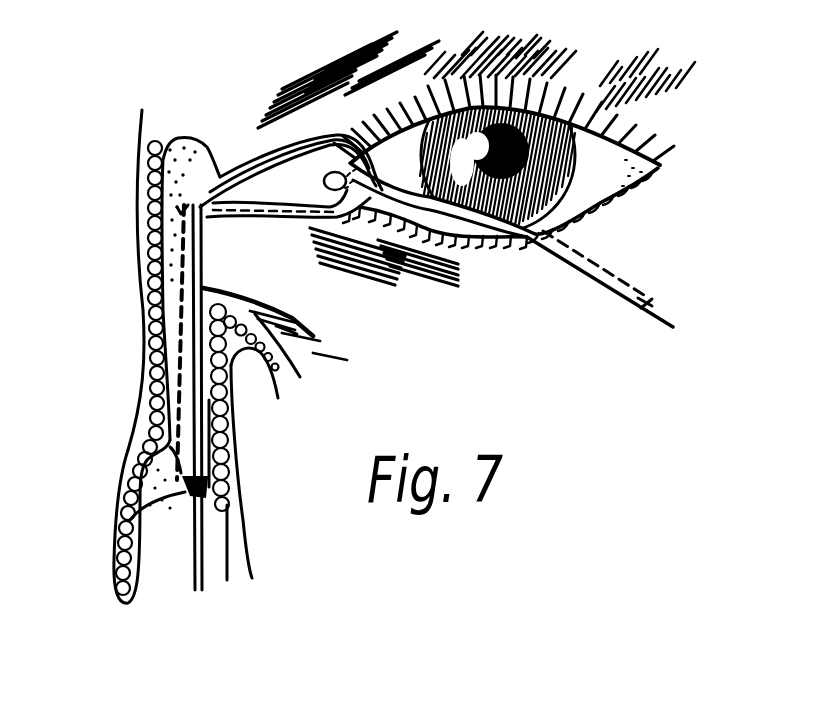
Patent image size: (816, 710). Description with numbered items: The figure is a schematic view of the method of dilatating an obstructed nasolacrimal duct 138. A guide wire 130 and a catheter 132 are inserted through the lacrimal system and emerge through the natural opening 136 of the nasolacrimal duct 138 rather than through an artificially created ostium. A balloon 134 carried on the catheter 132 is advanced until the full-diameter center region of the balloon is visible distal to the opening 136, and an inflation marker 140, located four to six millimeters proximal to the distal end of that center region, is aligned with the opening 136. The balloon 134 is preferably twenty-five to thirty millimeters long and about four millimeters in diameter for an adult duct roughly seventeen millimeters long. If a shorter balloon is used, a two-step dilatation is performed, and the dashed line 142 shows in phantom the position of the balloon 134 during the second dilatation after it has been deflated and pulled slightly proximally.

The guide wire 130 is at (200, 587).
The catheter 132 is at (607, 288).
The balloon 134 is at (243, 495).
The natural opening 136 is at (130, 465).
The nasolacrimal duct 138 is at (150, 368).
The inflation marker 140 is at (117, 523).
The dashed line 142 is at (138, 188).